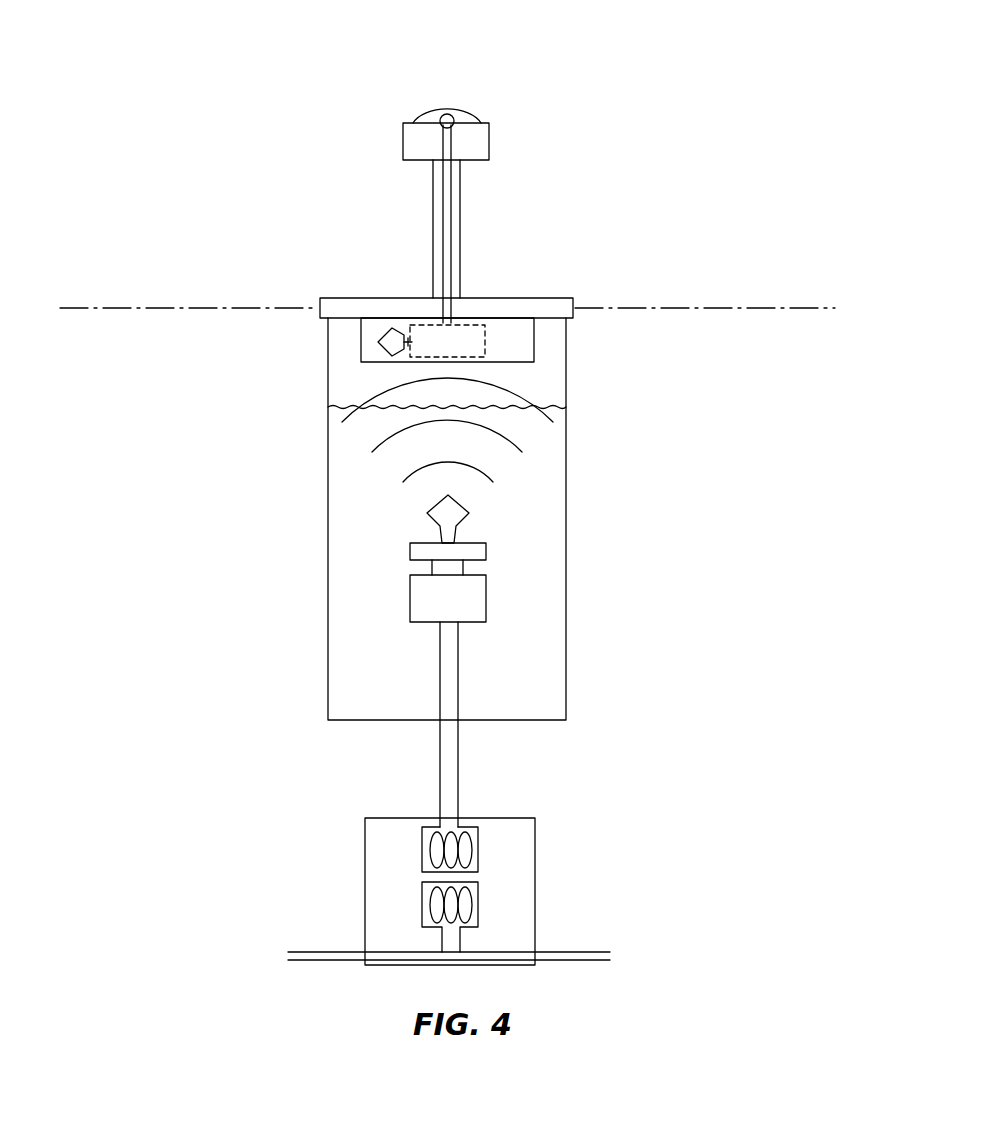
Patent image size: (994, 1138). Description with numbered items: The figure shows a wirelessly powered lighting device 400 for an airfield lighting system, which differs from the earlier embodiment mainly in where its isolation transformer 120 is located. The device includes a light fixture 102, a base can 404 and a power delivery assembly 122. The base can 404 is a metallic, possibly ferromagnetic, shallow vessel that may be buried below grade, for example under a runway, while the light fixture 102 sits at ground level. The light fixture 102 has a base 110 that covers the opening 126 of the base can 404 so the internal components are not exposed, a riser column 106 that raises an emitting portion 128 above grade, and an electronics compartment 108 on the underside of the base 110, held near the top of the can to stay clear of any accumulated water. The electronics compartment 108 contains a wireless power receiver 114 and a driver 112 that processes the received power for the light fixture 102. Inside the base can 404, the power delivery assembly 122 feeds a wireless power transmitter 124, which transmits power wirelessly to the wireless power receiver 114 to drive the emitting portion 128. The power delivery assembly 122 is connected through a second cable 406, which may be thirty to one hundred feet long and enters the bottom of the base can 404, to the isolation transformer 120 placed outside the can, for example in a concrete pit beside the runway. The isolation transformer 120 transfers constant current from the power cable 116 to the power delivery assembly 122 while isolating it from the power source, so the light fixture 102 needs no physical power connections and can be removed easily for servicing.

The wirelessly powered lighting device 400 is at (740, 95).
The emitting portion 128 is at (445, 99).
The light fixture 102 is at (490, 141).
The riser column 106 is at (462, 208).
The base 110 is at (333, 298).
The opening 126 is at (550, 327).
The electronics compartment 108 is at (360, 338).
The driver 112 is at (485, 340).
The wireless power receiver 114 is at (387, 328).
The base can 404 is at (568, 380).
The wireless power transmitter 124 is at (488, 552).
The power delivery assembly 122 is at (488, 600).
The second cable 406 is at (460, 774).
The isolation transformer 120 is at (535, 893).
The power cable 116 is at (573, 962).